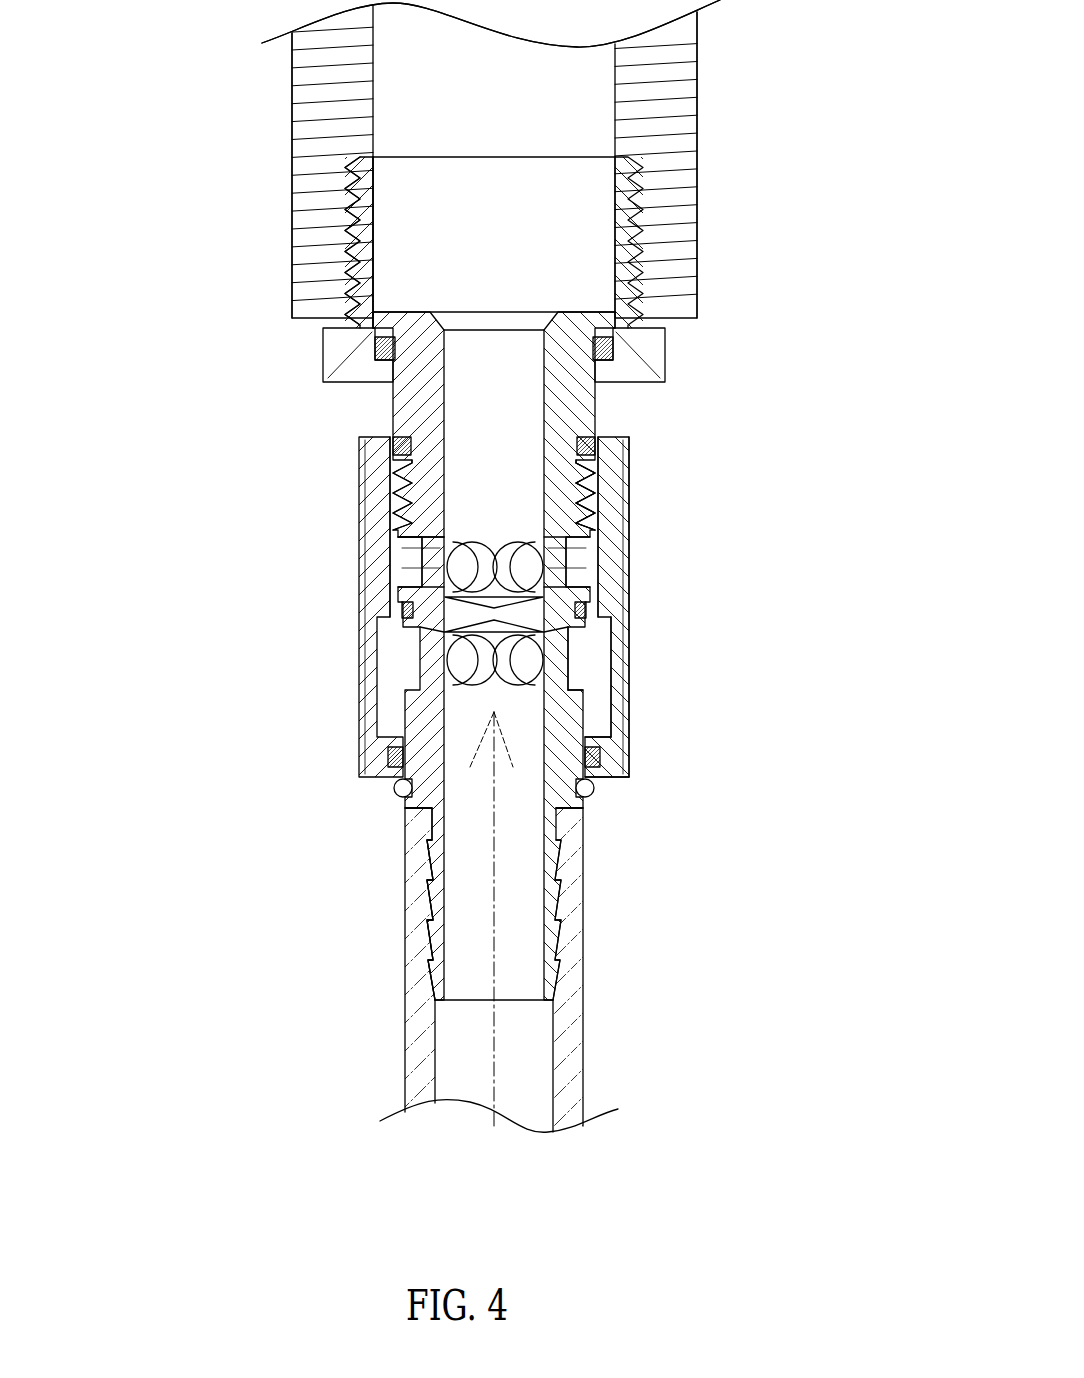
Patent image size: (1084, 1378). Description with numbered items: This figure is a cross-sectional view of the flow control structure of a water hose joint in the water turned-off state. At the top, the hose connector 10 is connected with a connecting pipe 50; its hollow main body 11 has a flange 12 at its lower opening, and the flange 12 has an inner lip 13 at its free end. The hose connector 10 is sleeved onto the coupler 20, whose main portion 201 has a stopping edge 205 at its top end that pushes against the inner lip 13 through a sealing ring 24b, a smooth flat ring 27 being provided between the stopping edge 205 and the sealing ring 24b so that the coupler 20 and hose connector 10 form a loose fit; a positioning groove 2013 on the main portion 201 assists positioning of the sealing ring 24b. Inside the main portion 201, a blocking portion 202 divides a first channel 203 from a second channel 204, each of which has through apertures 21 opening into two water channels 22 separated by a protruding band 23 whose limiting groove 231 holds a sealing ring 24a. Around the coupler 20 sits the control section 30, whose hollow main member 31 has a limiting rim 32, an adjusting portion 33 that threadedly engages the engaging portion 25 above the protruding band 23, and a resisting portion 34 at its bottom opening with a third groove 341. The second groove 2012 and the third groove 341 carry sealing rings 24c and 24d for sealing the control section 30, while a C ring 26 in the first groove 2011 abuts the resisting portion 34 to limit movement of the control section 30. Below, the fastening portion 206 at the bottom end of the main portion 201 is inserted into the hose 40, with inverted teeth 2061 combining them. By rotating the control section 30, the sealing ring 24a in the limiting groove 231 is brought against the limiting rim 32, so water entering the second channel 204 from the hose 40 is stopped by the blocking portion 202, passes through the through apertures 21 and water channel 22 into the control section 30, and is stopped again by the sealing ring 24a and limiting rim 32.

The hose connector 10 is at (658, 148).
The hollow main body 11 is at (678, 225).
The flange 12 is at (636, 345).
The inner lip 13 is at (662, 381).
The coupler 20 is at (372, 403).
The main portion 201 is at (400, 598).
The blocking portion 202 is at (400, 545).
The first channel 203 is at (330, 365).
The second channel 204 is at (475, 775).
The stopping edge 205 is at (345, 300).
The fastening portion 206 is at (405, 820).
The first groove 2011 is at (588, 803).
The second groove 2012 is at (620, 446).
The positioning groove 2013 is at (345, 328).
The inverted teeth 2061 is at (430, 962).
The through apertures 21 is at (632, 550).
The water channels 22 is at (390, 618).
The protruding band 23 is at (632, 698).
The limiting groove 231 is at (632, 660).
The sealing ring 24a is at (630, 597).
The sealing ring 24b is at (626, 384).
The sealing ring 24c is at (620, 437).
The sealing ring 24d is at (633, 750).
The engaging portion 25 is at (630, 500).
The C ring 26 is at (592, 797).
The smooth flat ring 27 is at (698, 291).
The control section 30 is at (337, 634).
The hollow main member 31 is at (630, 533).
The limiting rim 32 is at (630, 625).
The adjusting portion 33 is at (630, 545).
The resisting portion 34 is at (633, 740).
The third groove 341 is at (633, 772).
The hose 40 is at (592, 1071).
The connecting pipe 50 is at (275, 126).